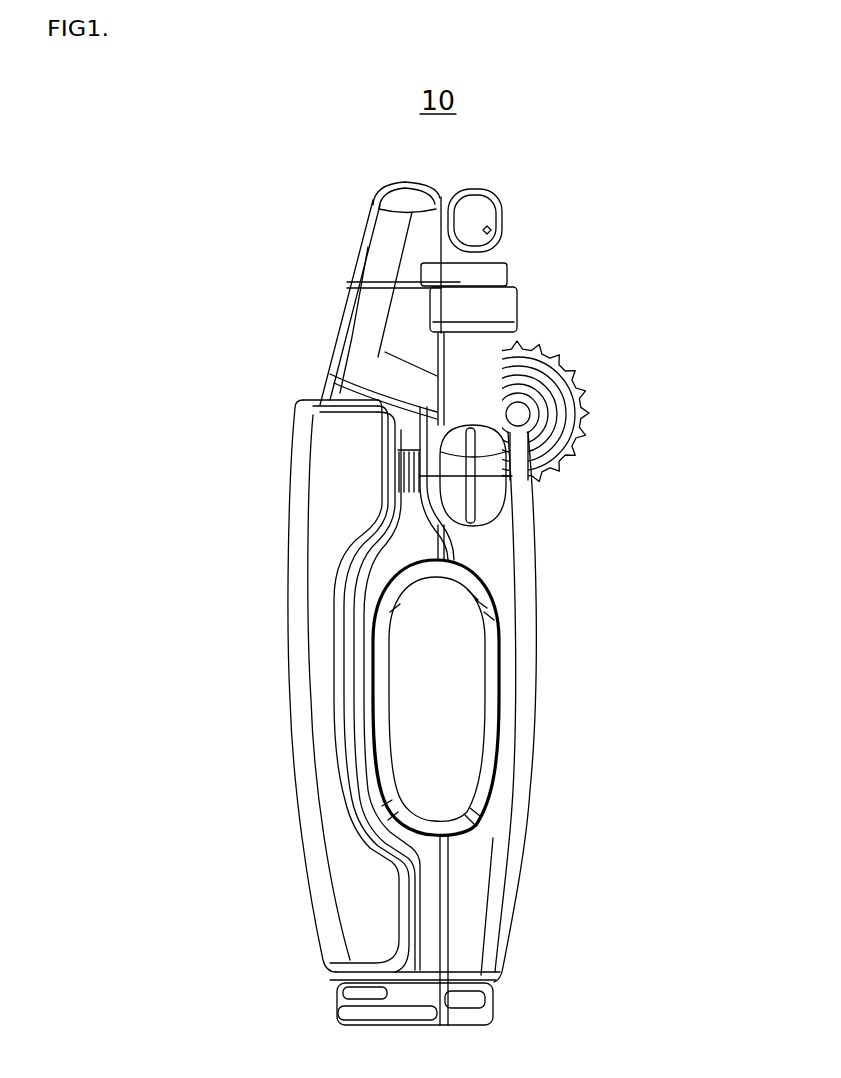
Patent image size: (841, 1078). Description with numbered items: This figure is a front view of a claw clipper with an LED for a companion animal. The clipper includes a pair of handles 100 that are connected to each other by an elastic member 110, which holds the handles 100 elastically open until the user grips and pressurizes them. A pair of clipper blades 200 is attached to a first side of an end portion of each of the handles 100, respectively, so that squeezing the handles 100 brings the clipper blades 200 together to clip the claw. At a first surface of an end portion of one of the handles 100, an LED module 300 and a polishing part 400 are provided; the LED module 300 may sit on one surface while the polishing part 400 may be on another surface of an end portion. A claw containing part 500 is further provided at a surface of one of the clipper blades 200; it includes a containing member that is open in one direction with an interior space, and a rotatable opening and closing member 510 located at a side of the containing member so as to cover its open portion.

The handles 100 is at (325, 747).
The elastic member 110 is at (535, 485).
The clipper blades 200 is at (318, 339).
The LED module 300 is at (522, 208).
The polishing part 400 is at (610, 382).
The claw containing part 500 is at (383, 260).
The opening and closing member 510 is at (507, 262).